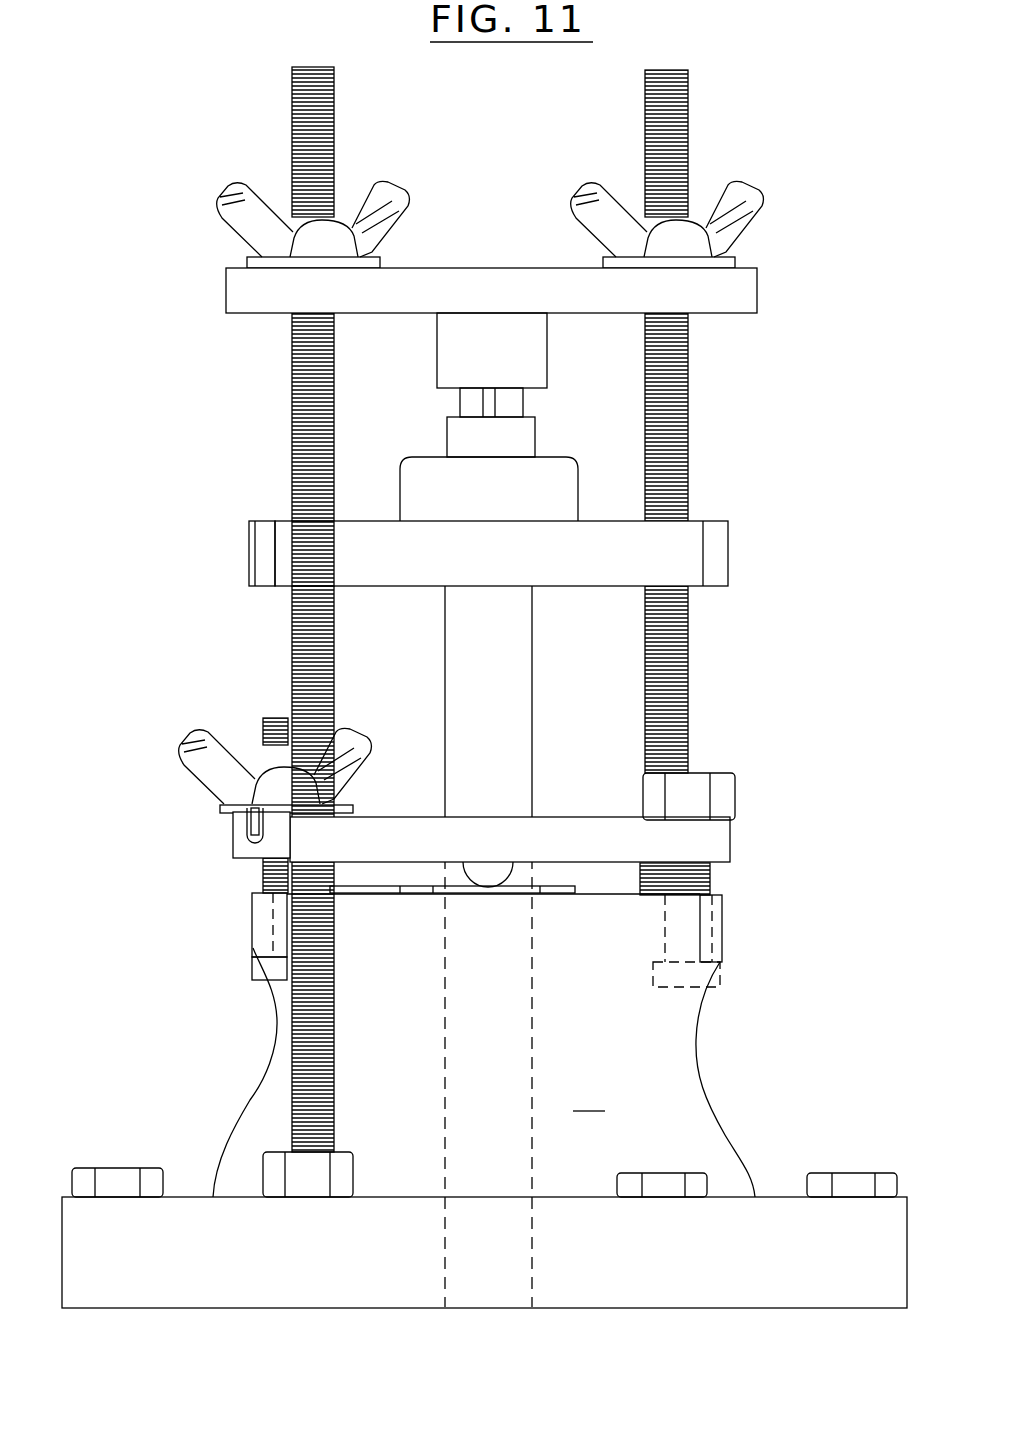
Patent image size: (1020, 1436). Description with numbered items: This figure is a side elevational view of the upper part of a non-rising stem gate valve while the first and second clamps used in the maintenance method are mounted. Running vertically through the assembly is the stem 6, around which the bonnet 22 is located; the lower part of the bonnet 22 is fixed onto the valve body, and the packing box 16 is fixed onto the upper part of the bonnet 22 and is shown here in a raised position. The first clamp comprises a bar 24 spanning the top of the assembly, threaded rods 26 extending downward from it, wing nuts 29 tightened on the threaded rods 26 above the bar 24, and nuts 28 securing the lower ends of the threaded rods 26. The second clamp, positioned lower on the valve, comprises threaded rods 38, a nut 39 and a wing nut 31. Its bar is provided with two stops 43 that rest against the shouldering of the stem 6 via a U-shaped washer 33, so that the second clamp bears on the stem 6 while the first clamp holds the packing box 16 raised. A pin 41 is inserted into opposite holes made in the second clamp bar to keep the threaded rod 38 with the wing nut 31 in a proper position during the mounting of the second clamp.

The stem 6 is at (510, 636).
The packing box 16 is at (503, 517).
The bonnet 22 is at (484, 1101).
The bar 24 is at (480, 285).
The threaded rods 26 is at (305, 410).
The nuts 28 is at (300, 1185).
The wing nuts 29 is at (318, 196).
The wing nut 31 is at (205, 750).
The U-shaped washer 33 is at (458, 893).
The threaded rods 38 is at (263, 878).
The nut 39 is at (725, 812).
The pin 41 is at (250, 824).
The stops 43 is at (503, 868).